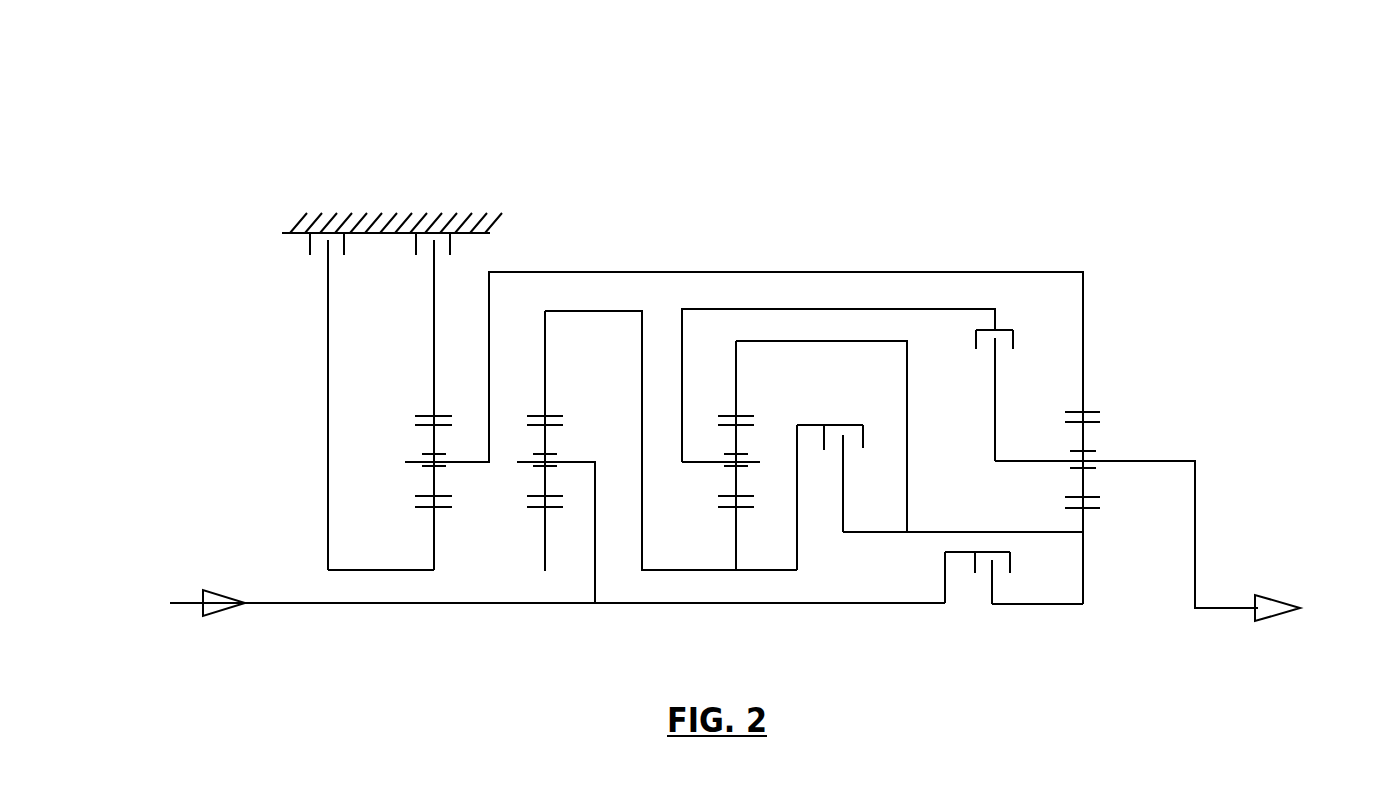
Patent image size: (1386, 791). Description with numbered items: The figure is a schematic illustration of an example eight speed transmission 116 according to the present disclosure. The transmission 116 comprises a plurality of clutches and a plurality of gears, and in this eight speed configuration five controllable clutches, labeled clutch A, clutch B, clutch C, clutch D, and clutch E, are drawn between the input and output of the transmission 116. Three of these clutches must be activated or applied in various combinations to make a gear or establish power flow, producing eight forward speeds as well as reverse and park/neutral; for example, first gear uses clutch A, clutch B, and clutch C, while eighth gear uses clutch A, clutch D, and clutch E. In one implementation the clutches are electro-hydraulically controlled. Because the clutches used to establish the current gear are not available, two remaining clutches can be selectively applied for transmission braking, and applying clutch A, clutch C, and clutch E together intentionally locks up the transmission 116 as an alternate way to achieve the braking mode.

The transmission 116 is at (258, 90).
The clutch A is at (327, 371).
The clutch B is at (433, 294).
The clutch C is at (992, 578).
The clutch D is at (1009, 392).
The clutch E is at (830, 477).